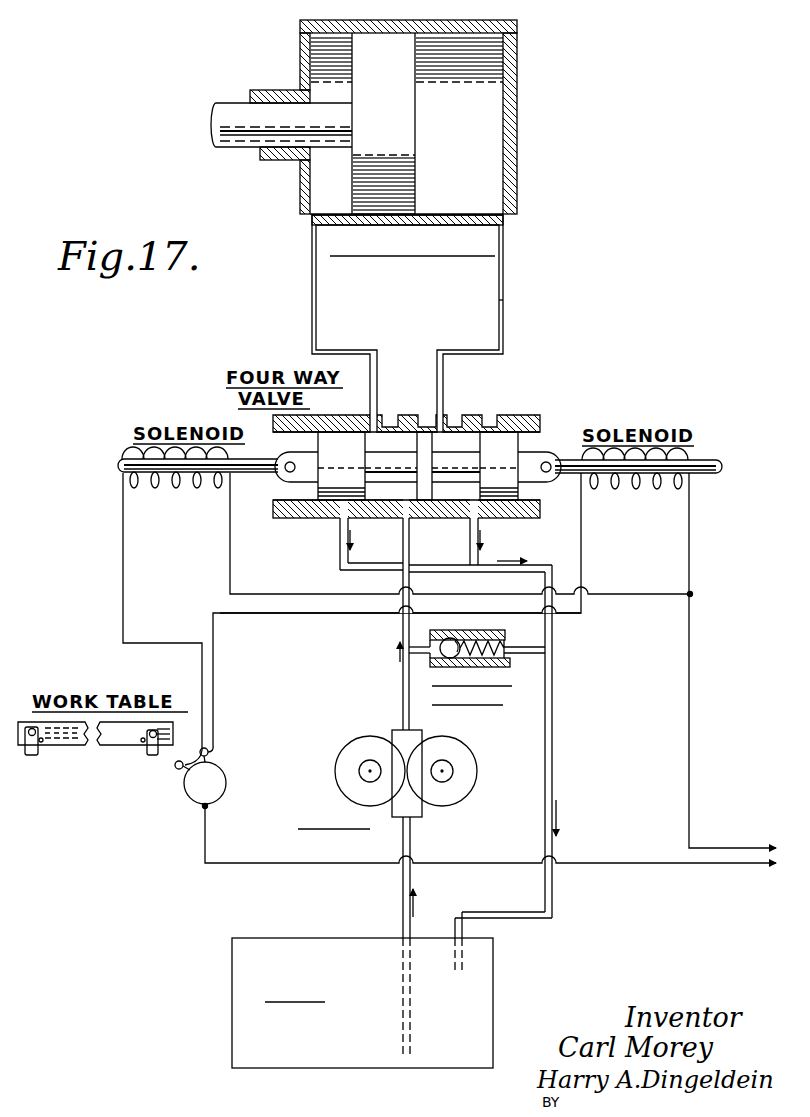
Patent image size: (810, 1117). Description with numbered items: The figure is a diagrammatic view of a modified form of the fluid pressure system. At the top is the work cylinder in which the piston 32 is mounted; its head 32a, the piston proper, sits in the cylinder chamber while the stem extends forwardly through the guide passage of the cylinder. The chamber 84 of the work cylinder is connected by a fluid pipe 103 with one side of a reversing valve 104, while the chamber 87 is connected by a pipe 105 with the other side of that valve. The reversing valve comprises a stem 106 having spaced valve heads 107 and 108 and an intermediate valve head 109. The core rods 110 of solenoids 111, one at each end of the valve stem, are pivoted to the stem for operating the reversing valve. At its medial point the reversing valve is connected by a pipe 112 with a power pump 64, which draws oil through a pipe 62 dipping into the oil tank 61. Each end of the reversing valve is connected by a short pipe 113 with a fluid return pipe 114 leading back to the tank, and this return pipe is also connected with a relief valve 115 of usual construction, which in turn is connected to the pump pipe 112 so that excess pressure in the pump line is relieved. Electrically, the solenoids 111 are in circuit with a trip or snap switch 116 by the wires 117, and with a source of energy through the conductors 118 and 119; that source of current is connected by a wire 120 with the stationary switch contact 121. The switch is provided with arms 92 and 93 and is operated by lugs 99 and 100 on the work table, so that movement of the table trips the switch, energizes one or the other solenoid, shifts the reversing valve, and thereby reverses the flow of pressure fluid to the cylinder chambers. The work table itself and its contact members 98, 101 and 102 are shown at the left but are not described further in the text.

The piston 32 is at (255, 125).
The piston head 32a is at (407, 127).
The work cylinder chamber 84 is at (328, 190).
The work cylinder chamber 87 is at (490, 174).
The fluid pipe 103 is at (313, 310).
The pipe 105 is at (503, 305).
The reversing valve 104 is at (499, 430).
The intermediate valve head 109 is at (421, 410).
The valve head 107 is at (332, 472).
The valve stem 106 is at (387, 474).
The valve head 108 is at (530, 465).
The core rod 110 is at (226, 485).
The solenoid 111 is at (170, 487).
The pump pipe 112 is at (403, 578).
The short pipe 113 is at (470, 542).
The fluid return pipe 114 is at (550, 683).
The relief valve 115 is at (340, 544).
The wire 117 is at (125, 580).
The wire 118 is at (229, 553).
The wire 119 is at (691, 558).
The wire 120 is at (490, 857).
The stationary switch contact 121 is at (207, 807).
The trip or snap switch 116 is at (220, 773).
The switch arm 92 is at (206, 748).
The switch arm 93 is at (183, 760).
The work table 98 is at (112, 738).
The lug 99 is at (152, 755).
The lug 100 is at (32, 755).
The contact screw 101 is at (142, 742).
The contact screw 102 is at (43, 742).
The power pump 64 is at (457, 747).
The pipe 62 is at (410, 843).
The fluid or oil tank 61 is at (475, 977).